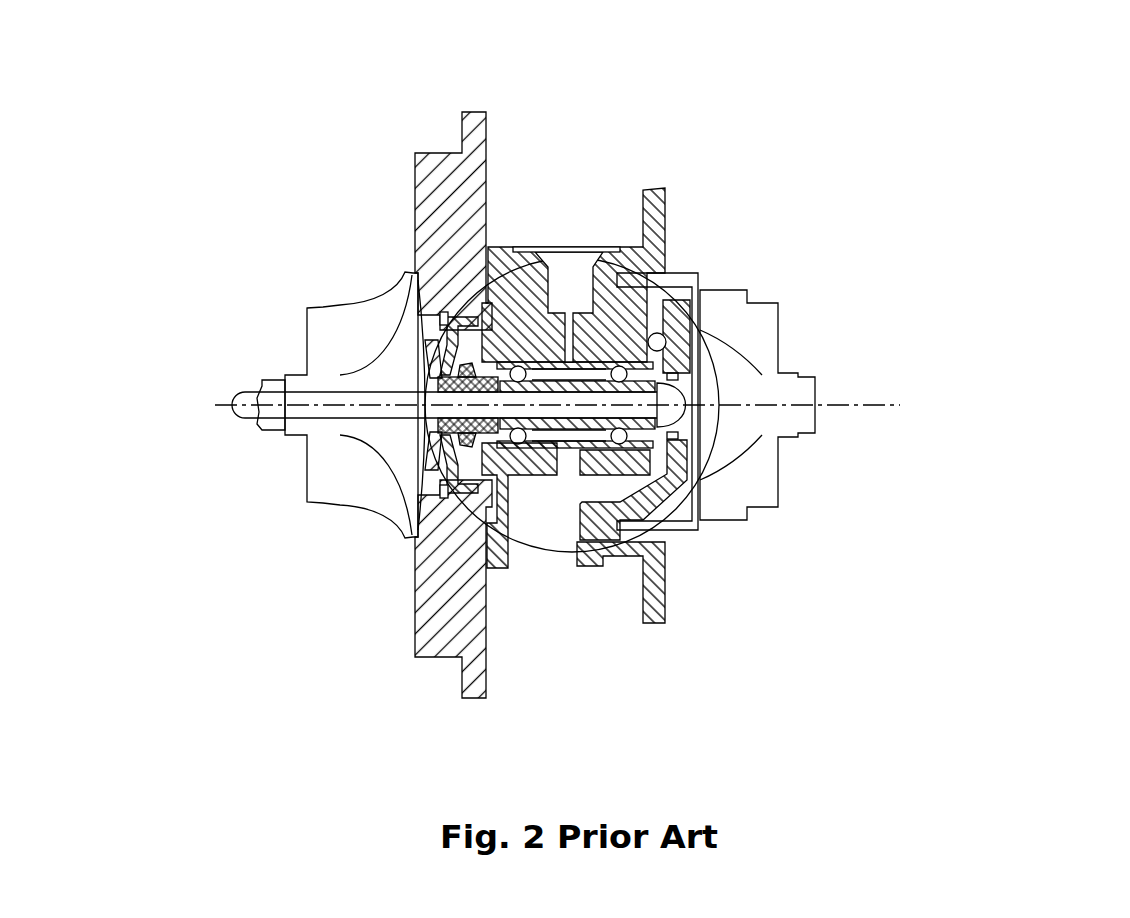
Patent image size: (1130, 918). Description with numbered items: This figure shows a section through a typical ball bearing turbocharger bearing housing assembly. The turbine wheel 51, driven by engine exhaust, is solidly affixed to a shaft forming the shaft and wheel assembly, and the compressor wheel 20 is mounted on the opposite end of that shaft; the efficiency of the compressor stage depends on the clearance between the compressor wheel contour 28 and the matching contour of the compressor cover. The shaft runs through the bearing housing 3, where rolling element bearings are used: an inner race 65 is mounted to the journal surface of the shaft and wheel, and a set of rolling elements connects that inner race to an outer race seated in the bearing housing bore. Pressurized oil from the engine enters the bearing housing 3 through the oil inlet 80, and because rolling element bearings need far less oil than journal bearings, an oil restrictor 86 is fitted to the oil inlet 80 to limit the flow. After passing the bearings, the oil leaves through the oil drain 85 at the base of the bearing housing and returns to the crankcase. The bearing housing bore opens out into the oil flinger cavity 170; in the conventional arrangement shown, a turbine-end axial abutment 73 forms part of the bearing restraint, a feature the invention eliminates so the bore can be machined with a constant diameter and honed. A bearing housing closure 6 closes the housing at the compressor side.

The bearing housing closure 6 is at (462, 210).
The oil restrictor 86 is at (492, 258).
The oil inlet 80 is at (577, 288).
The bearing housing 3 is at (667, 208).
The turbine-end axial abutment 73 is at (655, 342).
The oil flinger cavity 170 is at (703, 287).
The inner race 65 is at (690, 405).
The turbine wheel 51 is at (740, 495).
The compressor wheel 20 is at (395, 440).
The compressor wheel contour 28 is at (247, 518).
The oil drain 85 is at (547, 558).